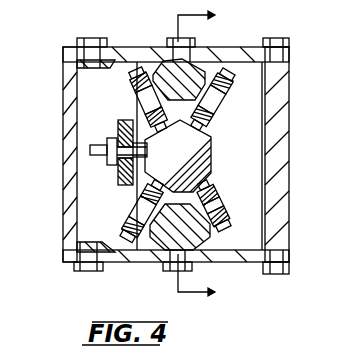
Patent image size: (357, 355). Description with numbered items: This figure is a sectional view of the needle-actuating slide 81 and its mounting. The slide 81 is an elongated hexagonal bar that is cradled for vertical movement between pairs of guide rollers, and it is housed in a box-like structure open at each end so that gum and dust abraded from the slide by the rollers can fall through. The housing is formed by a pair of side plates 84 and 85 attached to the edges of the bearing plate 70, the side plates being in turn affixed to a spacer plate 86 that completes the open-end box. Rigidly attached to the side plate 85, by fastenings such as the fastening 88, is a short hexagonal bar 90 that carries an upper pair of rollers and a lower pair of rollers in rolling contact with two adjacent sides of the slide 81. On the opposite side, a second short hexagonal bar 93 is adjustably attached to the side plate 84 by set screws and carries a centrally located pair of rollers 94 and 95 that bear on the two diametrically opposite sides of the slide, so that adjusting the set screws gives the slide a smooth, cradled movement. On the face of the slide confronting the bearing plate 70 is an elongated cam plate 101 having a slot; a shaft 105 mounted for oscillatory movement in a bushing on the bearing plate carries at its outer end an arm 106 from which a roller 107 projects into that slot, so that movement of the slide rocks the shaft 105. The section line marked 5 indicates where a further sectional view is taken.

The bearing plate 70 is at (62, 163).
The side plate 84 is at (153, 31).
The side plate 85 is at (243, 265).
The spacer plate 86 is at (285, 159).
The fastening 88 is at (164, 271).
The section line 5- 5 is at (203, 155).
The needle-actuating slide 81 is at (201, 156).
The short hexagonal bar 93 is at (198, 60).
The short hexagonal bar 90 is at (196, 238).
The roller 95 is at (138, 89).
The roller 94 is at (212, 106).
The cam plate 101 is at (116, 123).
The arm 106 is at (114, 140).
The roller 107 is at (118, 165).
The shaft 105 is at (104, 158).